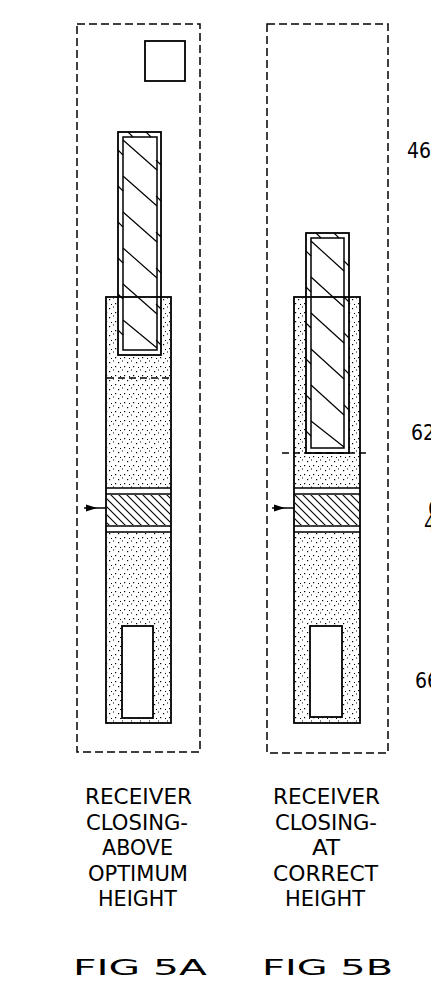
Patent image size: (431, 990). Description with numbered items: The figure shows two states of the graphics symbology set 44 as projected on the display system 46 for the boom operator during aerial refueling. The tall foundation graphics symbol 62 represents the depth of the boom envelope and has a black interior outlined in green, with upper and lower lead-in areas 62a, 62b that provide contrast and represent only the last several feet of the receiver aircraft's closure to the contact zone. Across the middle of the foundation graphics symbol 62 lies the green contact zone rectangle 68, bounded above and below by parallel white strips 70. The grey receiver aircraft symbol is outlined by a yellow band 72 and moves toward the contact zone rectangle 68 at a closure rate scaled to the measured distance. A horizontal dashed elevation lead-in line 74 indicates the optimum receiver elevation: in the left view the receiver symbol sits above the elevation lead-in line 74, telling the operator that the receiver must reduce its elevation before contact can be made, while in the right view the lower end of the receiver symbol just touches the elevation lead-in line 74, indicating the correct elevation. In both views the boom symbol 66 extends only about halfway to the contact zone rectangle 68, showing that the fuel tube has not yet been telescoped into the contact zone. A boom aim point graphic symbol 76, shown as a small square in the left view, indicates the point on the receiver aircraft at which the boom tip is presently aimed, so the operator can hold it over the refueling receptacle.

In FIG. 5A, the graphics symbology set 44 is at (84, 508).
In FIG. 5B, the graphics symbology set 44 is at (272, 508).
In FIG. 5A, the display system 46 is at (77, 184).
In FIG. 5B, the display system 46 is at (267, 184).
In FIG. 5A, the foundation graphics symbol 62 is at (106, 418).
In FIG. 5B, the foundation graphics symbol 62 is at (294, 418).
In FIG. 5A, the lead-in area 62a is at (160, 366).
In FIG. 5B, the lead-in area 62a is at (352, 375).
In FIG. 5A, the lead-in area 62b is at (155, 590).
In FIG. 5B, the lead-in area 62b is at (343, 590).
In FIG. 5A, the boom symbol 66 is at (130, 680).
In FIG. 5B, the boom symbol 66 is at (318, 680).
In FIG. 5A, the contact zone rectangle 68 is at (155, 515).
In FIG. 5B, the contact zone rectangle 68 is at (344, 515).
In FIG. 5A, the parallel white strips 70 is at (155, 490).
In FIG. 5B, the parallel white strips 70 is at (344, 490).
In FIG. 5A, the yellow band 72 is at (137, 252).
In FIG. 5B, the yellow band 72 is at (328, 280).
In FIG. 5A, the elevation lead-in line 74 is at (128, 377).
In FIG. 5B, the elevation lead-in line 74 is at (368, 453).
In FIG. 5A, the boom aim point graphic symbol 76 is at (173, 62).